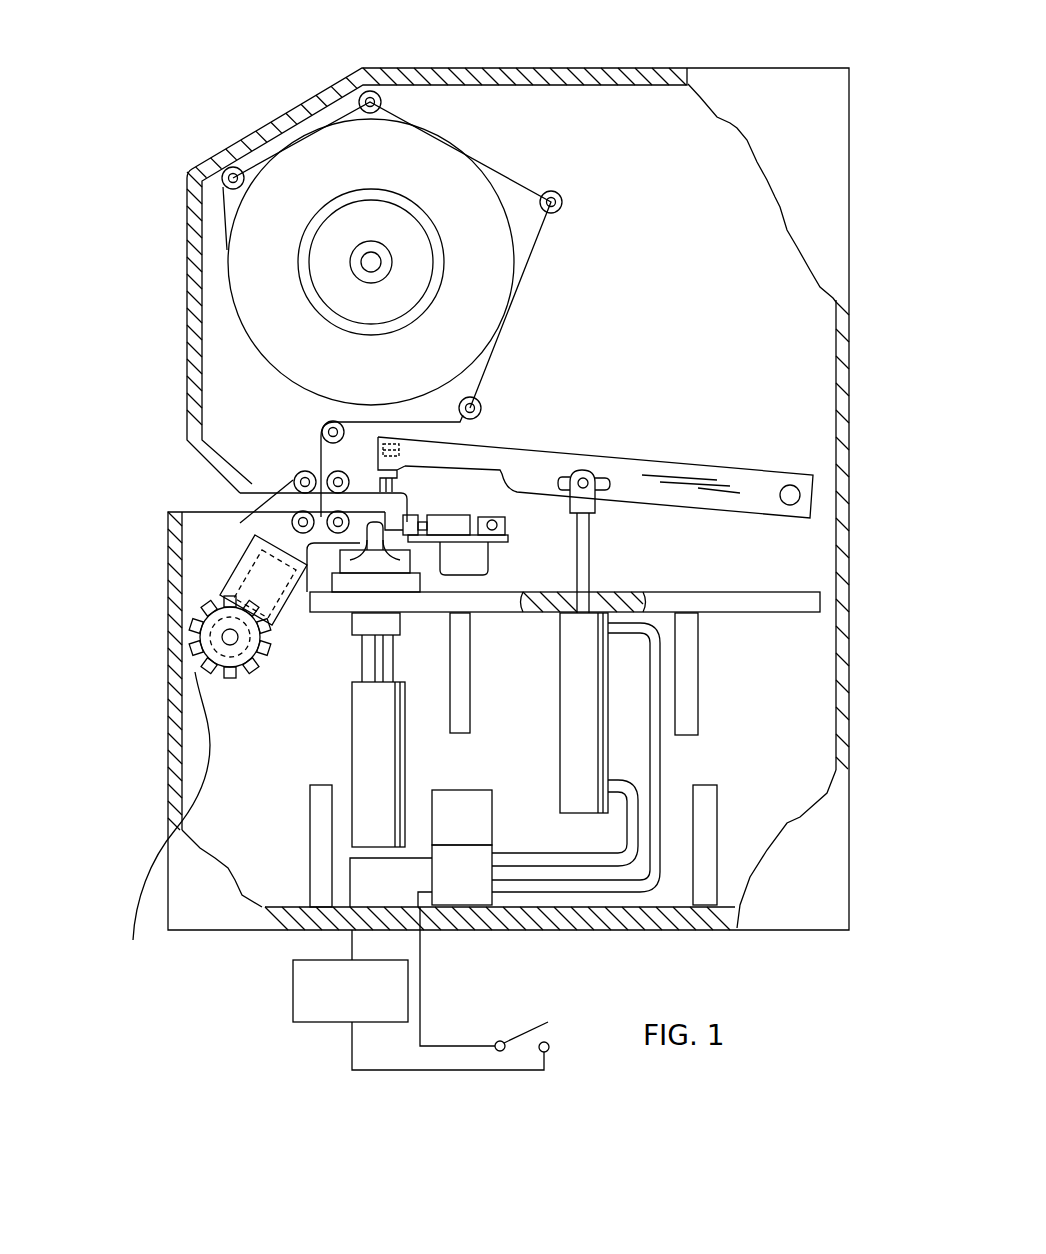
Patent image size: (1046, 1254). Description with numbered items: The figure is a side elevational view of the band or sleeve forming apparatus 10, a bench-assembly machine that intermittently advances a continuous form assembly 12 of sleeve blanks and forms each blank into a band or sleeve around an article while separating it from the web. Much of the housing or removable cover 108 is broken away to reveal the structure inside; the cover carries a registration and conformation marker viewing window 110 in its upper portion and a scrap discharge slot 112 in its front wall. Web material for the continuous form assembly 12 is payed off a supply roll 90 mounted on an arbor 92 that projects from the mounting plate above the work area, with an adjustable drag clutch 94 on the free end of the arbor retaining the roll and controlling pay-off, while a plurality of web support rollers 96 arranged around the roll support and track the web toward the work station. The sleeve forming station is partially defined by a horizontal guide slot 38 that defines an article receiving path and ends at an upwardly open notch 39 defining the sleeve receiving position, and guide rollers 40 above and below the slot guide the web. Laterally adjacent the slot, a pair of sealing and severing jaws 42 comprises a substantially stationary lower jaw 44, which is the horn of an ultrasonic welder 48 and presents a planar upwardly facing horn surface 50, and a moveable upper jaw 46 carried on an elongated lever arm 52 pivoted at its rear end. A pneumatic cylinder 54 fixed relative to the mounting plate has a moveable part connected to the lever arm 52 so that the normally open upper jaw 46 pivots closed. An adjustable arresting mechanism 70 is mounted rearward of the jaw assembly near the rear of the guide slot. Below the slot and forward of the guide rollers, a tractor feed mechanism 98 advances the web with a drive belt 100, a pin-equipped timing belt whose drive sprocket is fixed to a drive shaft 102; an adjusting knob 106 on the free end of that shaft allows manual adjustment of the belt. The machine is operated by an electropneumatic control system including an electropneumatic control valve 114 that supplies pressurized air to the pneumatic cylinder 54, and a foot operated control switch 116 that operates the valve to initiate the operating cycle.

The band or sleeve forming apparatus 10 is at (125, 205).
The continuous form assembly 12 is at (533, 302).
The guide slot 38 is at (240, 492).
The notch 39 is at (393, 522).
The guide rollers 40 is at (300, 517).
The sealing and severing jaws 42 is at (345, 457).
The lower jaw 44 is at (373, 552).
The upper jaw 46 is at (400, 465).
The ultrasonic welder 48 is at (340, 752).
The horn surface 50 is at (365, 512).
The lever arm 52 is at (630, 470).
The pneumatic cylinder 54 is at (565, 722).
The arresting mechanism 70 is at (440, 549).
The supply roll 90 is at (455, 170).
The arbor 92 is at (382, 260).
The adjustable drag clutch 94 is at (374, 250).
The web support rollers 96 is at (378, 95).
The tractor feed mechanism 98 is at (190, 660).
The drive belt 100 is at (243, 571).
The drive shaft 102 is at (238, 640).
The adjusting knob 106 is at (245, 674).
The housing or removable cover 108 is at (832, 160).
The viewing window 110 is at (290, 112).
The scrap discharge slot 112 is at (170, 790).
The electropneumatic control valve 114 is at (455, 805).
The foot operated control switch 116 is at (518, 1028).